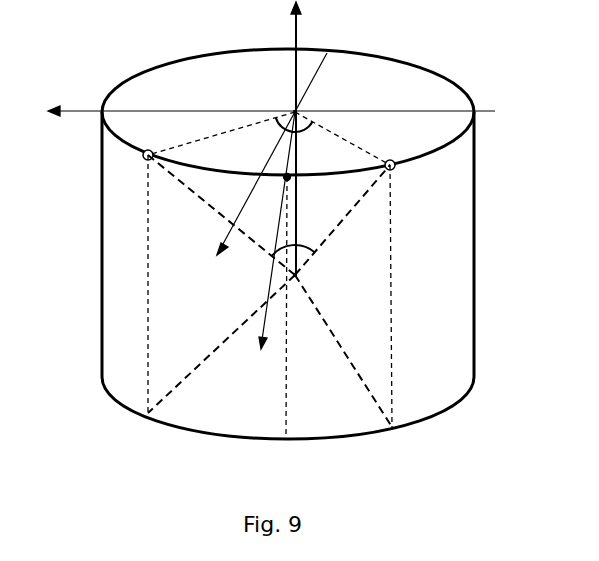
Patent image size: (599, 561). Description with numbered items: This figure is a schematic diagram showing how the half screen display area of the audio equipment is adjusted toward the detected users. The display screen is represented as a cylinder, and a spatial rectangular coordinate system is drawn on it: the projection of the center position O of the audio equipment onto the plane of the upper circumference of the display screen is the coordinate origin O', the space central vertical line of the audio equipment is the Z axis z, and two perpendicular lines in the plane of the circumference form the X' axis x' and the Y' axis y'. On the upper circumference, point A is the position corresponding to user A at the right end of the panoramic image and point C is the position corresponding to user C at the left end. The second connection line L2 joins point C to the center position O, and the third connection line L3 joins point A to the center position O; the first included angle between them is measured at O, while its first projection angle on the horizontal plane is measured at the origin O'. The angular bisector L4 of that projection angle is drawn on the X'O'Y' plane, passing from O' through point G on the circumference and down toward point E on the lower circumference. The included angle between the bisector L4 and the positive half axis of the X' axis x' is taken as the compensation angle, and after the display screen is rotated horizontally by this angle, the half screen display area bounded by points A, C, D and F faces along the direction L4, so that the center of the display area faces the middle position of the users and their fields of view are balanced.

The position of user A on the display screen circumference A is at (140, 163).
The position of user C on the display screen circumference C is at (400, 178).
The corner D of the half screen display area D is at (395, 309).
The point E is at (285, 322).
The corner F of the half screen display area F is at (140, 299).
The point G is at (300, 172).
The center position of the audio equipment O is at (273, 282).
The coordinate origin O' is at (277, 98).
The second connection line L2 is at (221, 215).
The third connection line L3 is at (342, 220).
The angular bisector L4 is at (264, 238).
The X' axis x' is at (262, 96).
The Y' axis y' is at (271, 173).
The Z axis z is at (307, 138).